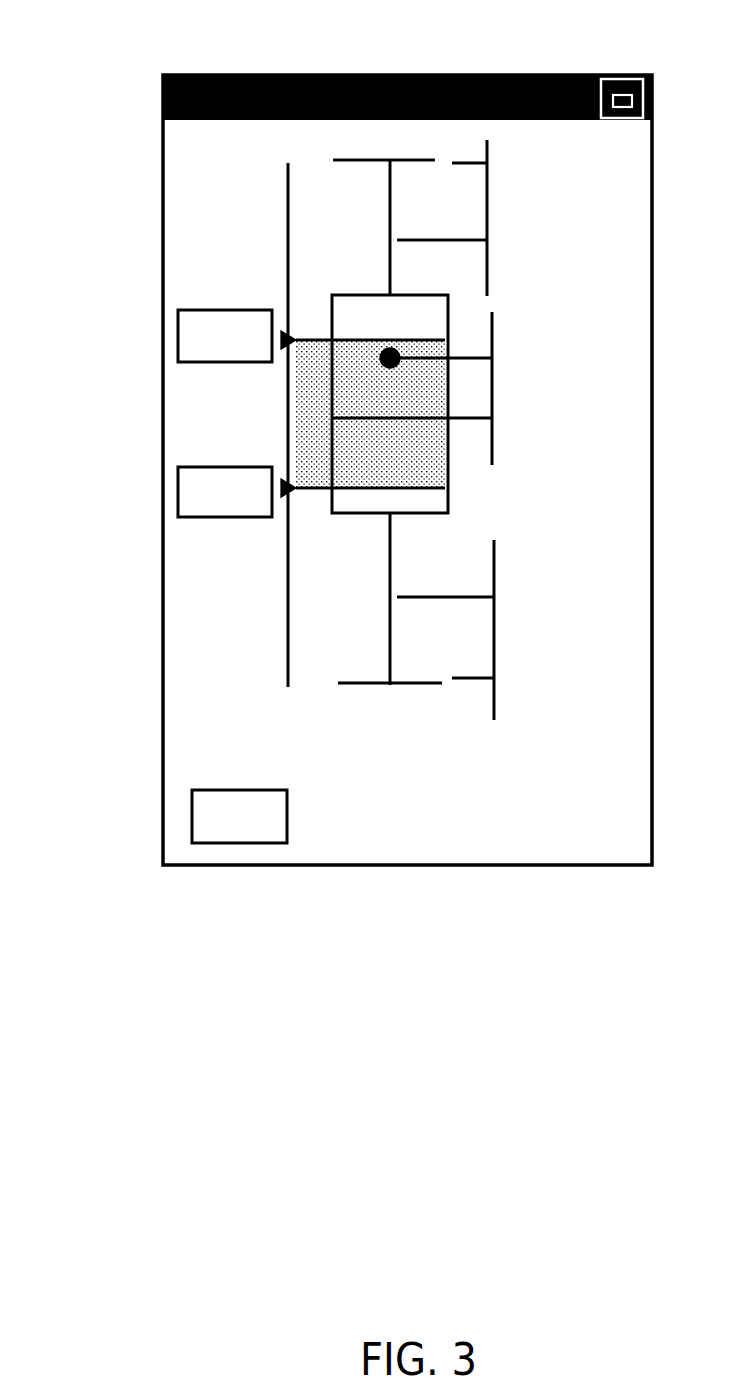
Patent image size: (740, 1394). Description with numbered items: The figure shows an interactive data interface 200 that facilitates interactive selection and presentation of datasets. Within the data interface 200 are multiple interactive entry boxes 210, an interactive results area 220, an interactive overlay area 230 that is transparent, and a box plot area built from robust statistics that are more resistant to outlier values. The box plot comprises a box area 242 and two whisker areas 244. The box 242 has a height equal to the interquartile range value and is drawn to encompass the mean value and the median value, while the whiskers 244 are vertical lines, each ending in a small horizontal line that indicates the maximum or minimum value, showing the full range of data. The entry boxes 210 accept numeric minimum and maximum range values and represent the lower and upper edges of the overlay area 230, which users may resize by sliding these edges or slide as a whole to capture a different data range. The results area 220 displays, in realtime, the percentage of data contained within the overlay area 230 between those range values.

The interactive data interface 200 is at (552, 75).
The interactive entry boxes 210 is at (178, 493).
The interactive results area 220 is at (192, 788).
The interactive overlay area 230 is at (448, 470).
The box area 242 is at (418, 514).
The whisker areas 244 is at (390, 215).